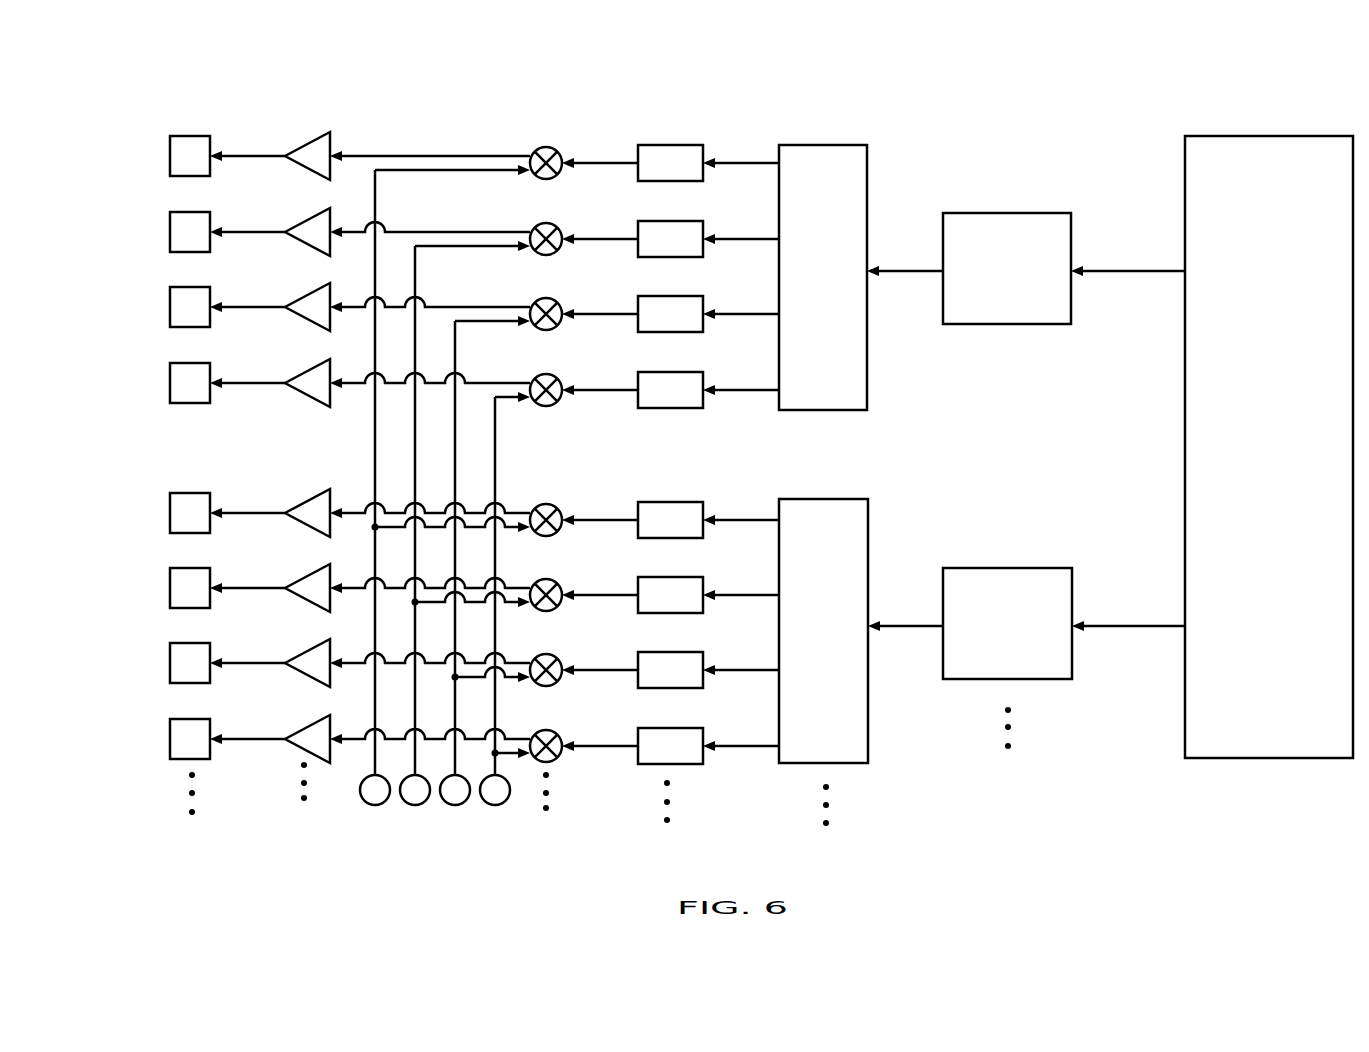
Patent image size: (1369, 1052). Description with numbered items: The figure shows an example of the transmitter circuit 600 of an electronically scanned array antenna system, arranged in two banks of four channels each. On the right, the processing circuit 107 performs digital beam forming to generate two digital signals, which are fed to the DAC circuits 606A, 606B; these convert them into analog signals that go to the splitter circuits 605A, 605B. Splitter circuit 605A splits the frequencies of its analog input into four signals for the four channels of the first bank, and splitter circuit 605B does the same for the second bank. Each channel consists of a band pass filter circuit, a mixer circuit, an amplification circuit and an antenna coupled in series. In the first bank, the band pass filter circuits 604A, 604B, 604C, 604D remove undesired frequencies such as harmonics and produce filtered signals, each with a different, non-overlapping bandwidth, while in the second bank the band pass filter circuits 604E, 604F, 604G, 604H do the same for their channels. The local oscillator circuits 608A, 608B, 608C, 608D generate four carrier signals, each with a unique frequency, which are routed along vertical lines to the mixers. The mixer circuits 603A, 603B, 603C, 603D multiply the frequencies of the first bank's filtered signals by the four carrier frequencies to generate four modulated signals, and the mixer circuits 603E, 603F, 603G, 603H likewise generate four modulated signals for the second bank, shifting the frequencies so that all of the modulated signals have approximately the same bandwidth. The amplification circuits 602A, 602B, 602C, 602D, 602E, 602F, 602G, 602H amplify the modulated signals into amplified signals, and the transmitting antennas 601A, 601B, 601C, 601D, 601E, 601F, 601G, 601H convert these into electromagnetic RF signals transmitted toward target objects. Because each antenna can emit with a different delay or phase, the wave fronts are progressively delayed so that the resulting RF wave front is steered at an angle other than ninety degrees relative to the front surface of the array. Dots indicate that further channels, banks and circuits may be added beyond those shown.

The transmitter circuit 600 is at (438, 56).
The processing circuit 107 is at (1253, 136).
The transmitting antenna 601A is at (190, 136).
The transmitting antenna 601B is at (190, 212).
The transmitting antenna 601C is at (190, 287).
The transmitting antenna 601D is at (190, 363).
The transmitting antenna 601E is at (190, 493).
The transmitting antenna 601F is at (190, 568).
The transmitting antenna 601G is at (190, 643).
The transmitting antenna 601H is at (190, 719).
The amplification circuit 602A is at (318, 138).
The amplification circuit 602B is at (316, 215).
The amplification circuit 602C is at (316, 290).
The amplification circuit 602D is at (316, 366).
The amplification circuit 602E is at (316, 496).
The amplification circuit 602F is at (316, 571).
The amplification circuit 602G is at (316, 646).
The amplification circuit 602H is at (316, 722).
The mixer circuit 603A is at (537, 150).
The mixer circuit 603B is at (537, 226).
The mixer circuit 603C is at (537, 301).
The mixer circuit 603D is at (537, 377).
The mixer circuit 603E is at (537, 507).
The mixer circuit 603F is at (537, 582).
The mixer circuit 603G is at (537, 657).
The mixer circuit 603H is at (537, 733).
The band pass filter circuit 604A is at (675, 145).
The band pass filter circuit 604B is at (675, 221).
The band pass filter circuit 604C is at (675, 296).
The band pass filter circuit 604D is at (675, 372).
The band pass filter circuit 604E is at (675, 502).
The band pass filter circuit 604F is at (675, 577).
The band pass filter circuit 604G is at (675, 652).
The band pass filter circuit 604H is at (675, 728).
The splitter circuit 605A is at (797, 145).
The splitter circuit 605B is at (822, 499).
The digital-to-analog converter circuit 606A is at (1005, 213).
The digital-to-analog converter circuit 606B is at (1007, 568).
The local oscillator circuit 608A is at (370, 805).
The local oscillator circuit 608B is at (413, 806).
The local oscillator circuit 608C is at (457, 806).
The local oscillator circuit 608D is at (500, 805).